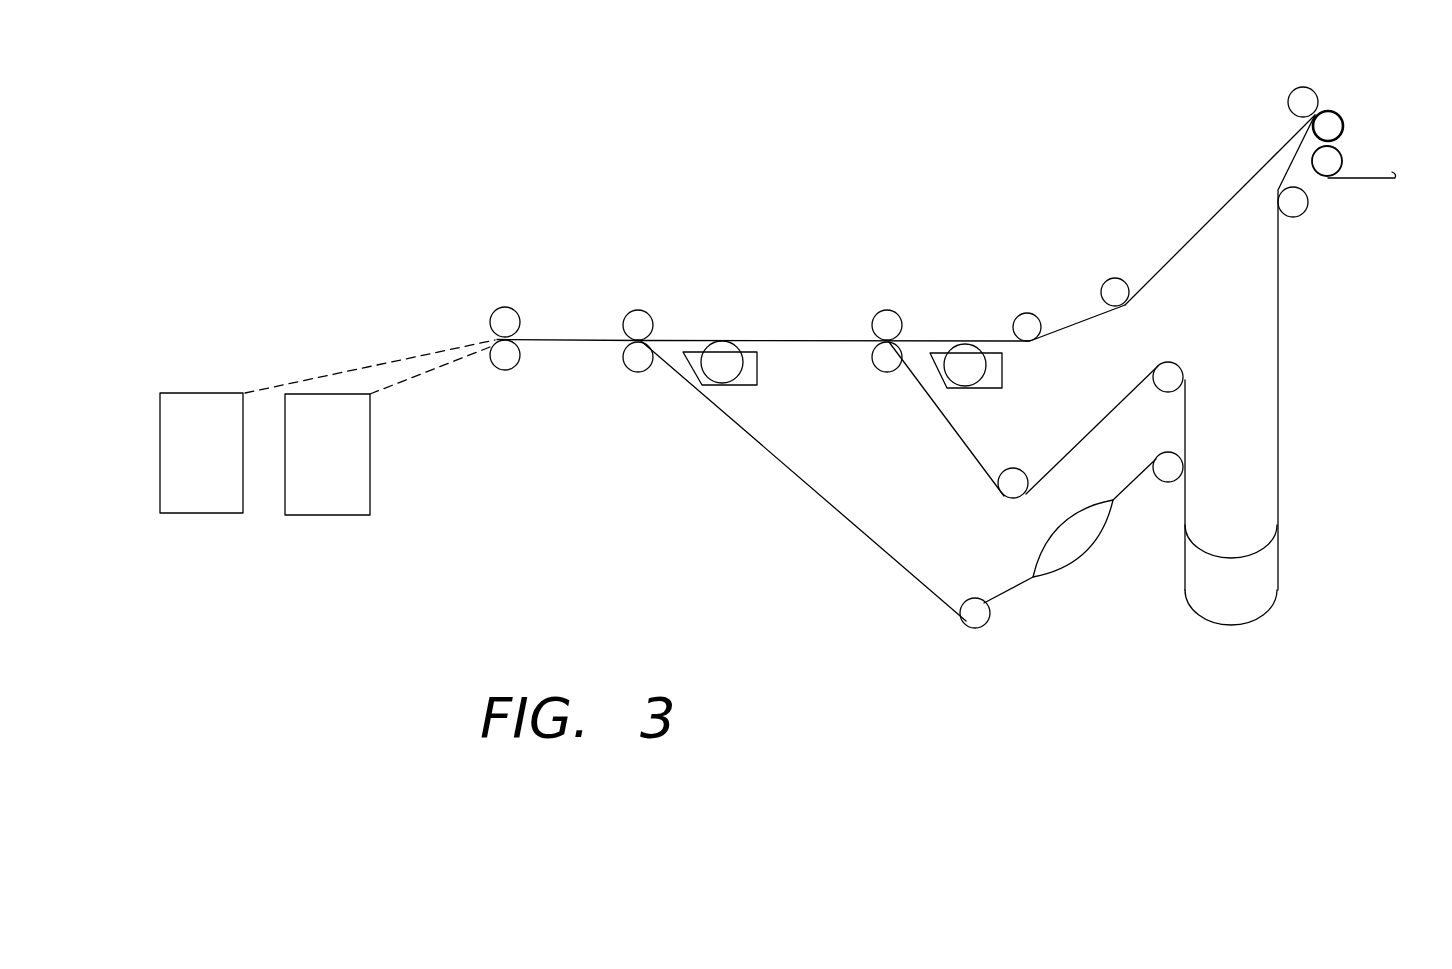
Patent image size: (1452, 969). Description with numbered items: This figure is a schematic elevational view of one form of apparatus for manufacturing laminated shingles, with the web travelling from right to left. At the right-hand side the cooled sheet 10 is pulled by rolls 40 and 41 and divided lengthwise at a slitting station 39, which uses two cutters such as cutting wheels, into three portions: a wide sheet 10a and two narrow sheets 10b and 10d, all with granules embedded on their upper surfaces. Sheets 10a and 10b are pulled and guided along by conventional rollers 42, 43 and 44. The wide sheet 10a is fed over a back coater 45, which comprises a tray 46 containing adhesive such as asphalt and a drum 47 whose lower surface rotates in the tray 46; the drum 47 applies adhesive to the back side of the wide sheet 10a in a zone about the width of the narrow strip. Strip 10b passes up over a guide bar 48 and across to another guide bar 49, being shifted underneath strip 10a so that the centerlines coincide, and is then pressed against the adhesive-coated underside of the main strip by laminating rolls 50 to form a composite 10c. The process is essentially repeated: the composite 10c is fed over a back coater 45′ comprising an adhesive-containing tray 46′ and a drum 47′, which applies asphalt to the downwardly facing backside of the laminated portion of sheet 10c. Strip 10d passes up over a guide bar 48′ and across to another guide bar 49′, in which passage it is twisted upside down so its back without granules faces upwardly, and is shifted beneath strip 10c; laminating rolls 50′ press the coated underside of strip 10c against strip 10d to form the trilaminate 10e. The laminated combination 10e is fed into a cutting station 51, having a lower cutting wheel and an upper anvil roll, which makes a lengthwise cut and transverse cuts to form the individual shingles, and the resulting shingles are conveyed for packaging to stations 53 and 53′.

The sheet 10 is at (1376, 183).
The wide sheet 10a is at (1243, 183).
The narrow sheet 10b is at (1113, 415).
The composite 10c is at (782, 338).
The narrow sheet 10d is at (1025, 595).
The trilaminate 10e is at (583, 337).
The slitting station 39 is at (1296, 93).
The roll 40 is at (1341, 158).
The roll 41 is at (1333, 113).
The roller 42 is at (1107, 285).
The roller 43 is at (1023, 315).
The roller 44 is at (1306, 207).
The back coater 45 is at (957, 327).
The back coater 45′ is at (708, 323).
The tray 46 is at (1002, 365).
The tray 46′ is at (758, 357).
The drum 47 is at (978, 377).
The drum 47′ is at (732, 370).
The guide bar 48 is at (1178, 363).
The guide bar 48′ is at (1177, 467).
The guide bar 49 is at (1003, 483).
The guide bar 49′ is at (960, 613).
The laminating rolls 50 is at (887, 311).
The laminating rolls 50′ is at (638, 310).
The cutting station 51 is at (493, 327).
The packaging station 53 is at (352, 473).
The packaging station 53′ is at (222, 471).